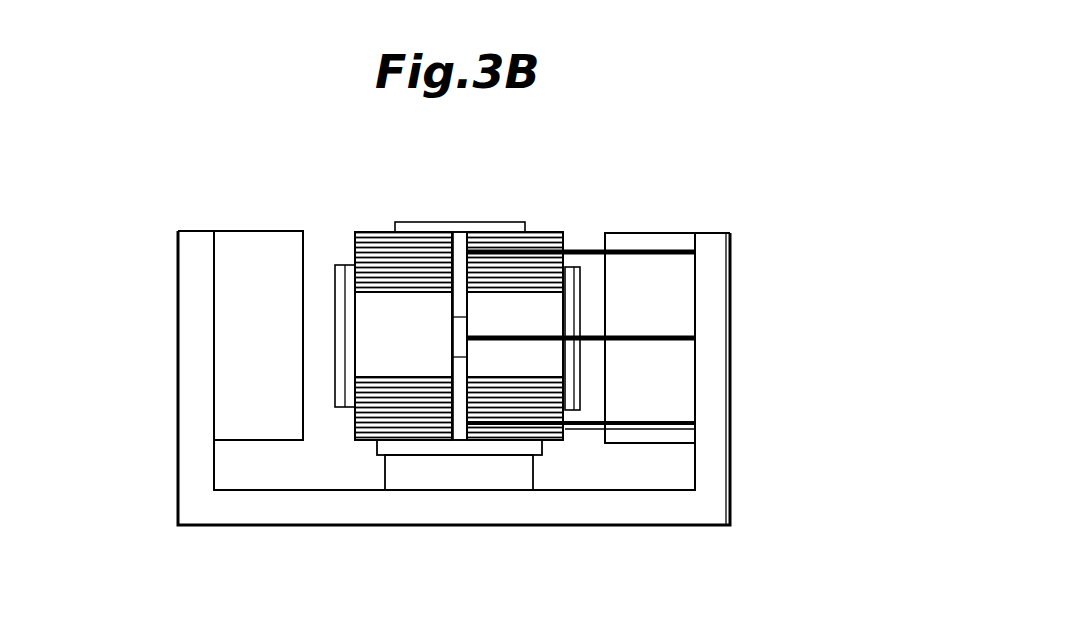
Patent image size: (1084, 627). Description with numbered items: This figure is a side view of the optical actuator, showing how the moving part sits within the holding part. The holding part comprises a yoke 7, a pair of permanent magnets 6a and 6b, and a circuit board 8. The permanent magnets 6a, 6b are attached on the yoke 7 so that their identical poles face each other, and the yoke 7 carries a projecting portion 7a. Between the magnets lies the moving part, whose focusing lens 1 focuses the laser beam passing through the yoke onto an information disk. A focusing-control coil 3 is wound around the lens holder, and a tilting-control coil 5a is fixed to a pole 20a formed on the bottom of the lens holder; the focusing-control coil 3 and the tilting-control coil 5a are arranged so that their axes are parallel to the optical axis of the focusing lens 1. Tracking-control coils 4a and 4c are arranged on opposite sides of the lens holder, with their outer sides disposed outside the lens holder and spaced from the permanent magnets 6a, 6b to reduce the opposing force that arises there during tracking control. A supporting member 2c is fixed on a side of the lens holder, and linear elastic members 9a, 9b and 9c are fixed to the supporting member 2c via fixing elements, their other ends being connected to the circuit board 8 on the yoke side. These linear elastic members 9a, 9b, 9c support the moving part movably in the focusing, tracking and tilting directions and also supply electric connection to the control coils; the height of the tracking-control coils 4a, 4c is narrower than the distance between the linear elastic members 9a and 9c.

The focusing lens 1 is at (455, 222).
The focusing-control coil 3 is at (377, 232).
The tracking-control coil 4c is at (338, 265).
The tracking-control coil 4a is at (582, 267).
The linear elastic member 9a is at (653, 252).
The linear elastic member 9b is at (642, 332).
The linear elastic member 9c is at (645, 425).
The permanent magnet 6a is at (660, 293).
The permanent magnet 6b is at (228, 315).
The circuit board 8 is at (730, 420).
The yoke 7 is at (685, 510).
The projecting portion 7a is at (437, 477).
The pole 20a is at (482, 450).
The tilting-control coil 5a is at (357, 442).
The supporting member 2c is at (458, 442).